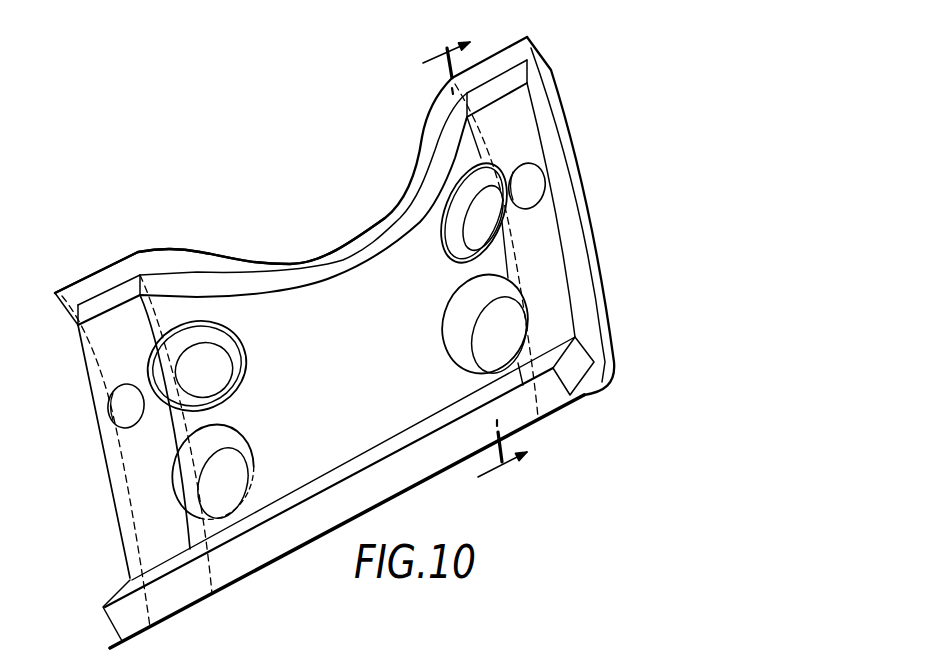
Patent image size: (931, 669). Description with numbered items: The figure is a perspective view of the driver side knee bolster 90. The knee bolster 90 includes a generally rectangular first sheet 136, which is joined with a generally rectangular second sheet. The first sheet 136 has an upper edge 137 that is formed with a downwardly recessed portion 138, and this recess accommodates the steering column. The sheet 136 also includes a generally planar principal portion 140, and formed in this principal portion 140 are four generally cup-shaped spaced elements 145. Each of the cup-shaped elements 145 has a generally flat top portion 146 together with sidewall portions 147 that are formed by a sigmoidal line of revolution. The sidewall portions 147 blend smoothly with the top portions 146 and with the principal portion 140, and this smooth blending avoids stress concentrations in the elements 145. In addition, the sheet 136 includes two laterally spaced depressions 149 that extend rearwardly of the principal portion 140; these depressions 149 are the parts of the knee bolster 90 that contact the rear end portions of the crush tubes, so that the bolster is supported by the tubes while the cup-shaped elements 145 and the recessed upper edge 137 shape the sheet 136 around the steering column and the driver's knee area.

The driver side knee bolster 90 is at (356, 333).
The first sheet 136 is at (87, 358).
The upper edge 137 is at (97, 273).
The downwardly recessed portion 138 is at (290, 262).
The principal portion 140 is at (130, 457).
The cup-shaped spaced elements 145 is at (236, 508).
The top portion 146 is at (243, 468).
The sidewall portions 147 is at (227, 432).
The depressions 149 is at (533, 185).